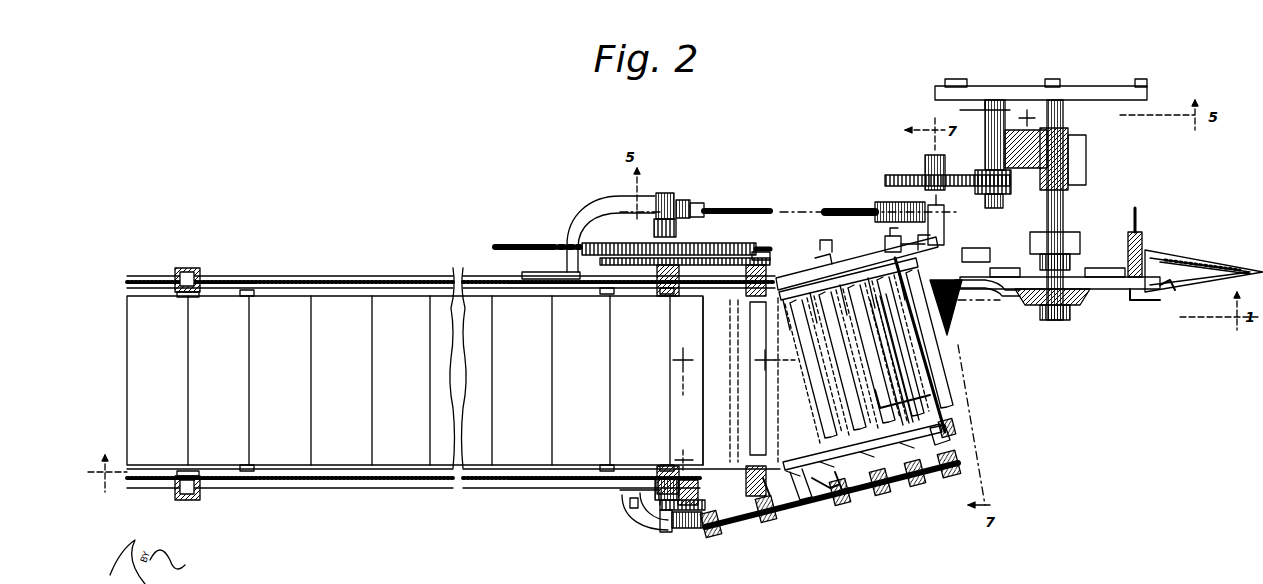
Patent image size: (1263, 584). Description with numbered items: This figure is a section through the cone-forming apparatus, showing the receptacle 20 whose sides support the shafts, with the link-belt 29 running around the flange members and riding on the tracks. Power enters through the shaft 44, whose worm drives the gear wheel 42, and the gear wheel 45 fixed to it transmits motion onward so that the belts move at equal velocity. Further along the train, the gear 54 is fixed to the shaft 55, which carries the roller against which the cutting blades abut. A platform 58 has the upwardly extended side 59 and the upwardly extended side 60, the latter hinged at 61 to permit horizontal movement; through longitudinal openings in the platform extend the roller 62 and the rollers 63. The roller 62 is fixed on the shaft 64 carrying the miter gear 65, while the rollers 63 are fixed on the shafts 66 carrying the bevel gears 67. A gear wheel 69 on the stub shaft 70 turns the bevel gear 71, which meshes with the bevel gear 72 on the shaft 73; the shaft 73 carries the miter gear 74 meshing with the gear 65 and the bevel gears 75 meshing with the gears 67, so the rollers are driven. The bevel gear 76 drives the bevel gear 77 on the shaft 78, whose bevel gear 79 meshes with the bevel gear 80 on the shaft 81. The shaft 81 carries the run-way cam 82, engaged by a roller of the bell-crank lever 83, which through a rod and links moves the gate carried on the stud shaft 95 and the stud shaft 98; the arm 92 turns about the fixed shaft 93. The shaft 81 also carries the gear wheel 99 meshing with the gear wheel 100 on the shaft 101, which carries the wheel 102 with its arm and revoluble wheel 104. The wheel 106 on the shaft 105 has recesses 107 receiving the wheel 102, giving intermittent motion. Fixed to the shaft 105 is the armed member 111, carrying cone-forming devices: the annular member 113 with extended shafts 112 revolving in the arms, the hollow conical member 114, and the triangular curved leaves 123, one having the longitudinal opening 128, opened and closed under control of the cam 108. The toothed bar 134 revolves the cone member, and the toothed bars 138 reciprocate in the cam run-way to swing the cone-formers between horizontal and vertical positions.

The receptacle 20 is at (218, 292).
The link-belt 29 is at (525, 448).
The gear wheel 42 is at (760, 252).
The shaft 44 is at (514, 245).
The gear wheel 45 is at (640, 262).
The gear 54 is at (784, 262).
The shaft 55 is at (770, 485).
The platform 58 is at (806, 484).
The upwardly extended side 59 is at (820, 472).
The upwardly extended side 60 is at (822, 282).
The hinge 61 is at (706, 300).
The roller 62 is at (808, 393).
The roller 63 is at (905, 432).
The shaft 64 is at (836, 462).
The miter gear 65 is at (836, 490).
The shaft 66 is at (958, 455).
The bevel gear 67 is at (895, 486).
The gear wheel 69 is at (634, 505).
The stub shaft 70 is at (686, 535).
The bevel gear 71 is at (666, 532).
The bevel gear 72 is at (710, 532).
The shaft 73 is at (745, 522).
The miter gear 74 is at (832, 492).
The bevel gear 75 is at (922, 400).
The bevel gear 76 is at (700, 226).
The bevel gear 77 is at (698, 204).
The shaft 78 is at (742, 209).
The bevel gear 79 is at (896, 205).
The bevel gear 80 is at (945, 222).
The shaft 81 is at (935, 160).
The run-way cam 82 is at (970, 255).
The bell-crank lever 83 is at (822, 252).
The arm 92 is at (905, 300).
The fixed shaft 93 is at (898, 372).
The stud shaft 95 is at (888, 238).
The stud shaft 98 is at (948, 428).
The gear wheel 99 is at (906, 176).
The gear wheel 100 is at (1006, 182).
The shaft 101 is at (997, 208).
The wheel 102 is at (937, 92).
The revoluble wheel 104 is at (1053, 79).
The shaft 105 is at (1066, 210).
The wheel 106 is at (1116, 86).
The recess 107 is at (952, 79).
The cam 108 is at (1035, 302).
The armed member 111 is at (1080, 302).
The extended shaft 112 is at (1180, 286).
The annular member 113 is at (1175, 251).
The hollow conical member 114 is at (1226, 284).
The triangular curved leaf 123 is at (1210, 266).
The longitudinal opening 128 is at (988, 294).
The toothed bar 134 is at (1141, 220).
The toothed bar 138 is at (993, 279).